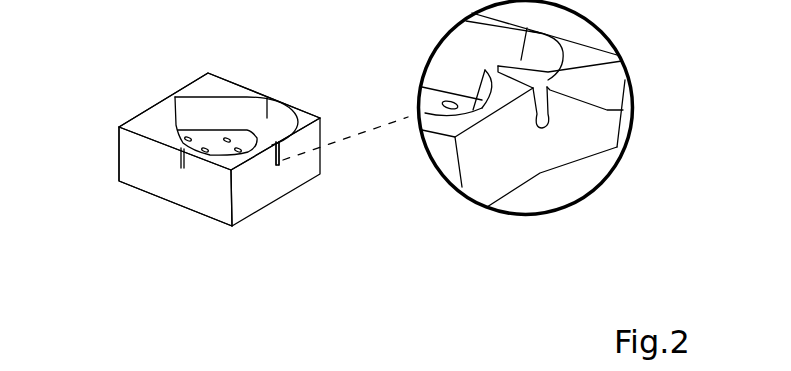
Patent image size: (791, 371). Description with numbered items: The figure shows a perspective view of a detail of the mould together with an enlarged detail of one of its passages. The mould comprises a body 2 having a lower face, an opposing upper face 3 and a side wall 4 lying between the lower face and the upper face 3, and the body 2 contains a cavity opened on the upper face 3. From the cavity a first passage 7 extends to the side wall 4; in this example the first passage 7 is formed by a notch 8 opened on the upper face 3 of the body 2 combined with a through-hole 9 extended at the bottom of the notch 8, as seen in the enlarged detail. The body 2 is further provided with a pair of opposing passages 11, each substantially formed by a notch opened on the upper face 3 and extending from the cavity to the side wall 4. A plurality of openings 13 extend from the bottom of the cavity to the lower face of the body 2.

The body 2 is at (168, 228).
The upper face 3 is at (130, 122).
The side wall 4 is at (127, 172).
The first passage 7 is at (274, 142).
The notch 8 is at (620, 109).
The through-hole 9 is at (545, 128).
The opposing passages 11 is at (177, 160).
The openings 13 is at (227, 138).